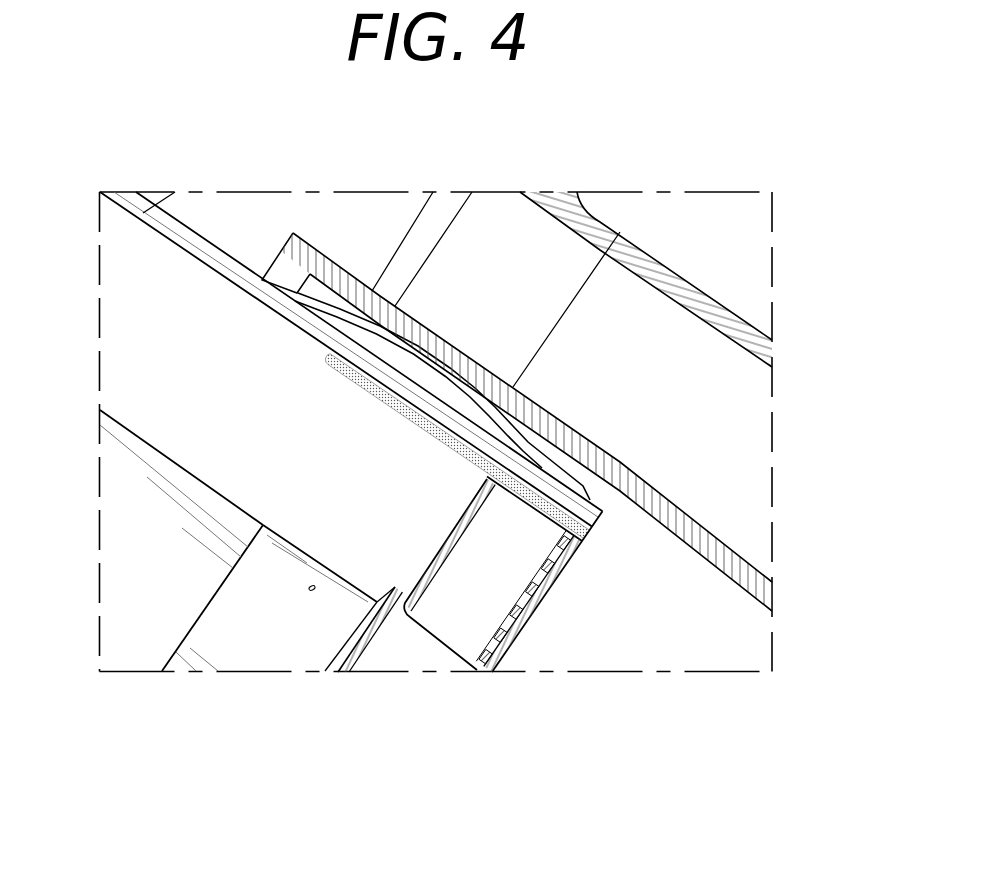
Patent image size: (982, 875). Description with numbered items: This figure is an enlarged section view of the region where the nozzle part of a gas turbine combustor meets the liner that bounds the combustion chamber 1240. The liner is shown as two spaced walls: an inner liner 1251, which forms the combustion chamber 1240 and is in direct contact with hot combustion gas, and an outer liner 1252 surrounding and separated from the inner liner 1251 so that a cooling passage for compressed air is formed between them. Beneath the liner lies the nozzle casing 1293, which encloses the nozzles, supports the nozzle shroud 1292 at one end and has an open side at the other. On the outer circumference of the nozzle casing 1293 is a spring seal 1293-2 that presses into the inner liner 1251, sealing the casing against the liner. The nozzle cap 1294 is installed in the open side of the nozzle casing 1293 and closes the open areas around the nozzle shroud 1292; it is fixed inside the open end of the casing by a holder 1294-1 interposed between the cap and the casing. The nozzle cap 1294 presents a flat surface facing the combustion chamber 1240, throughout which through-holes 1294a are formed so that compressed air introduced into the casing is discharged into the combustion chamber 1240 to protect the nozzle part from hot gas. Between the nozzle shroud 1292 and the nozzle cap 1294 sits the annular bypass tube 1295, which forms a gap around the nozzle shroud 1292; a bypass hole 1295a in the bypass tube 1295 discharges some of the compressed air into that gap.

The combustion chamber 1240 is at (645, 602).
The inner liner 1251 is at (688, 524).
The outer liner 1252 is at (692, 296).
The nozzle shroud 1292 is at (160, 574).
The nozzle casing 1293 is at (200, 243).
The spring seal 1293-2 is at (338, 317).
The nozzle cap 1294 is at (540, 603).
The holder 1294-1 is at (372, 393).
The through-holes 1294a is at (537, 598).
The annular bypass tube 1295 is at (240, 646).
The bypass hole 1295a is at (315, 589).